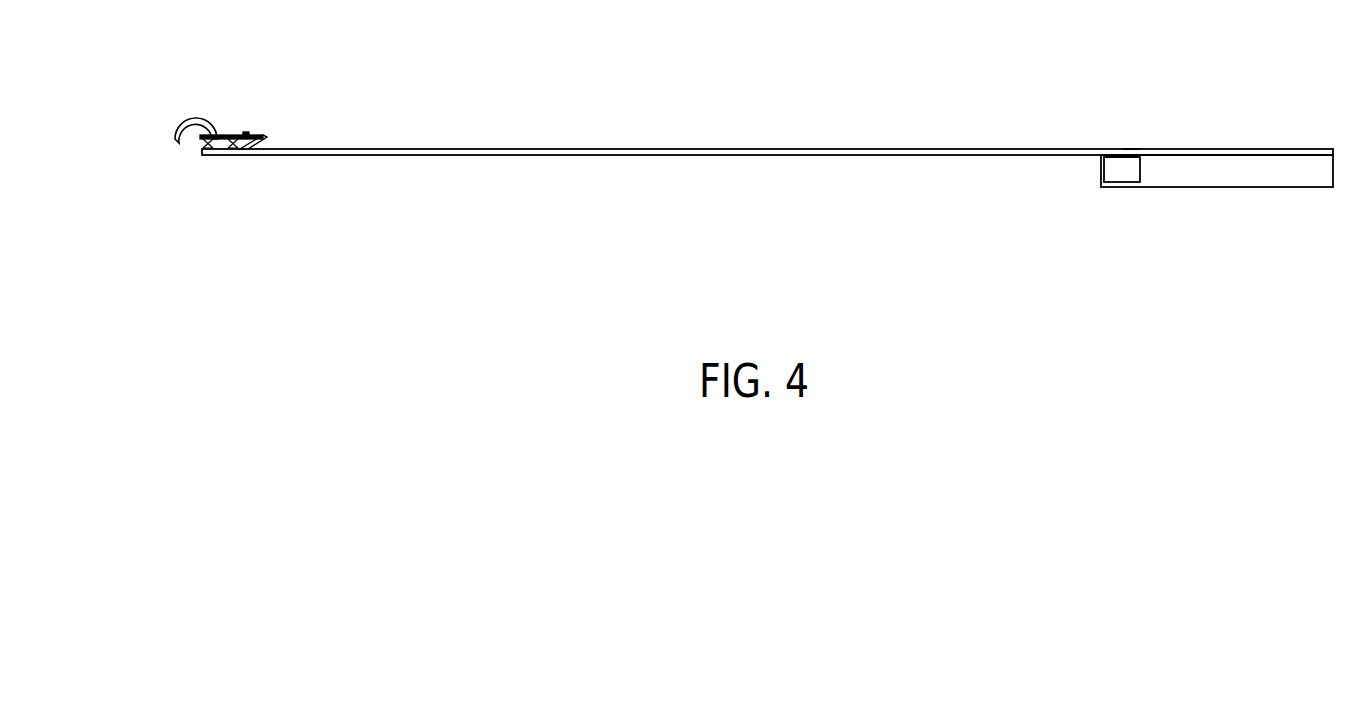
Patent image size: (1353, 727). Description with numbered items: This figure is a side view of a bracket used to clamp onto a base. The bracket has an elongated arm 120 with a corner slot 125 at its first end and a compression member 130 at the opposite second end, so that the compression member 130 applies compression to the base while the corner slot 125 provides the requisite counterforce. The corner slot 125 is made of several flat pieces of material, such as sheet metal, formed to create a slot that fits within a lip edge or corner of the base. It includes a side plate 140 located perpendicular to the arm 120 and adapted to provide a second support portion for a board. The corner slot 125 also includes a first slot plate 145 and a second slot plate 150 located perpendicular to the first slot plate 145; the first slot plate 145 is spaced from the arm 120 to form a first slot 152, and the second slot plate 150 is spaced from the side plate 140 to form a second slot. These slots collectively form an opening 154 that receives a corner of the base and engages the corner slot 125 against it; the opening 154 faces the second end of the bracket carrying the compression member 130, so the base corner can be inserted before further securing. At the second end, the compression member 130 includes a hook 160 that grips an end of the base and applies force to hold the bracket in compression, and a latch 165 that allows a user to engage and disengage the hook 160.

The arm 120 is at (728, 148).
The corner slot 125 is at (1176, 155).
The compression member 130 is at (188, 118).
The side plate 140 is at (1217, 170).
The first slot plate 145 is at (1131, 149).
The second slot plate 150 is at (1122, 164).
The first slot 152 is at (1112, 150).
The opening 154 is at (1105, 138).
The hook 160 is at (174, 139).
The latch 165 is at (244, 151).